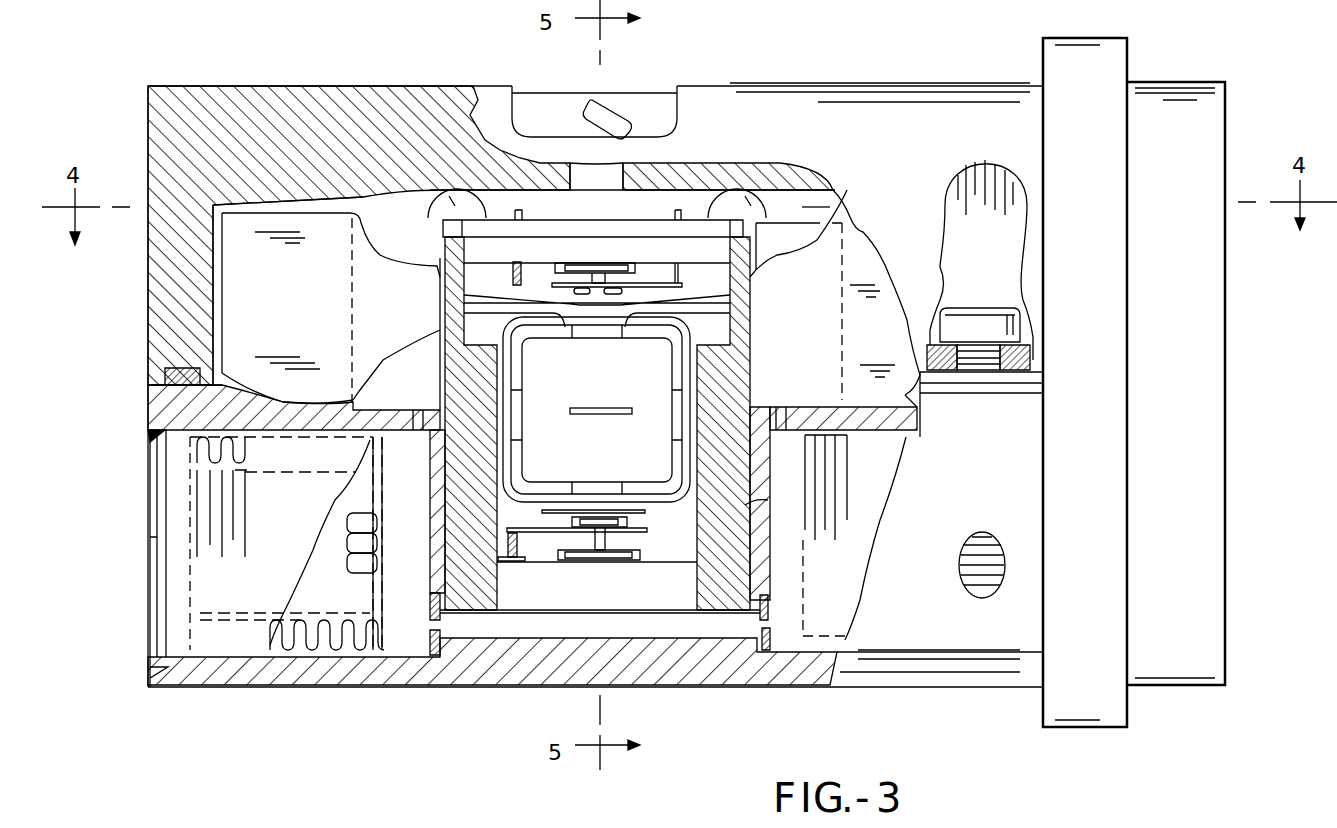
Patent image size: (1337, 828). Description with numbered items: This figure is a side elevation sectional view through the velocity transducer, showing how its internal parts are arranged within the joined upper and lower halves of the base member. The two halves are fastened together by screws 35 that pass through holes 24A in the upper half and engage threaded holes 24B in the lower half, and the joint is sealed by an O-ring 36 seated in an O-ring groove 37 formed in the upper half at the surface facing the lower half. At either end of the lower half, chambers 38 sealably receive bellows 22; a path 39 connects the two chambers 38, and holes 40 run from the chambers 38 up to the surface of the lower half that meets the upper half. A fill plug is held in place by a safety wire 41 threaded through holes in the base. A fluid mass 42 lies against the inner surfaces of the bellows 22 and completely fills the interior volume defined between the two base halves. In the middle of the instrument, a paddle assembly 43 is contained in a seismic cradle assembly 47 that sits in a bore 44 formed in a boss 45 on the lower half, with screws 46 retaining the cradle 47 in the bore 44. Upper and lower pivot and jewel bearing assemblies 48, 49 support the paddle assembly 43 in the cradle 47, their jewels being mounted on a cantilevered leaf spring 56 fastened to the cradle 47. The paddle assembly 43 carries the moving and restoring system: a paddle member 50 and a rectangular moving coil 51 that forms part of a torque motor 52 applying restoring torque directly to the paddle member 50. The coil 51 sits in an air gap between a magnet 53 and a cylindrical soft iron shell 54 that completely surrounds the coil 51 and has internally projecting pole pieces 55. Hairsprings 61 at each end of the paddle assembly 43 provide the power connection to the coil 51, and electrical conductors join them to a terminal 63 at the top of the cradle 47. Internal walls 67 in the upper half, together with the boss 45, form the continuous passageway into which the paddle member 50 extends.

The bellows 22 is at (308, 642).
The holes 24A is at (1028, 200).
The threaded holes 24B is at (975, 595).
The screws 35 is at (990, 318).
The O-ring 36 is at (156, 388).
The O-ring groove 37 is at (165, 372).
The chambers 38 is at (400, 662).
The path 39 is at (637, 658).
The holes 40 is at (418, 425).
The safety wire 41 is at (626, 121).
The fluid mass 42 is at (413, 505).
The paddle assembly 43 is at (418, 240).
The bore 44 is at (742, 540).
The boss 45 is at (352, 310).
The screws 46 is at (432, 200).
The seismic cradle assembly 47 is at (668, 210).
The upper pivot and jewel bearing assembly 48 is at (632, 272).
The lower pivot and jewel bearing assembly 49 is at (617, 540).
The paddle member 50 is at (300, 215).
The rectangular moving coil 51 is at (690, 318).
The torque motor 52 is at (667, 518).
The magnet 53 is at (700, 348).
The cylindrical soft iron shell 54 is at (690, 370).
The pole pieces 55 is at (753, 505).
The leaf spring 56 is at (578, 265).
The hairsprings 61 is at (655, 270).
The terminal 63 is at (738, 186).
The internal walls 67 is at (228, 259).